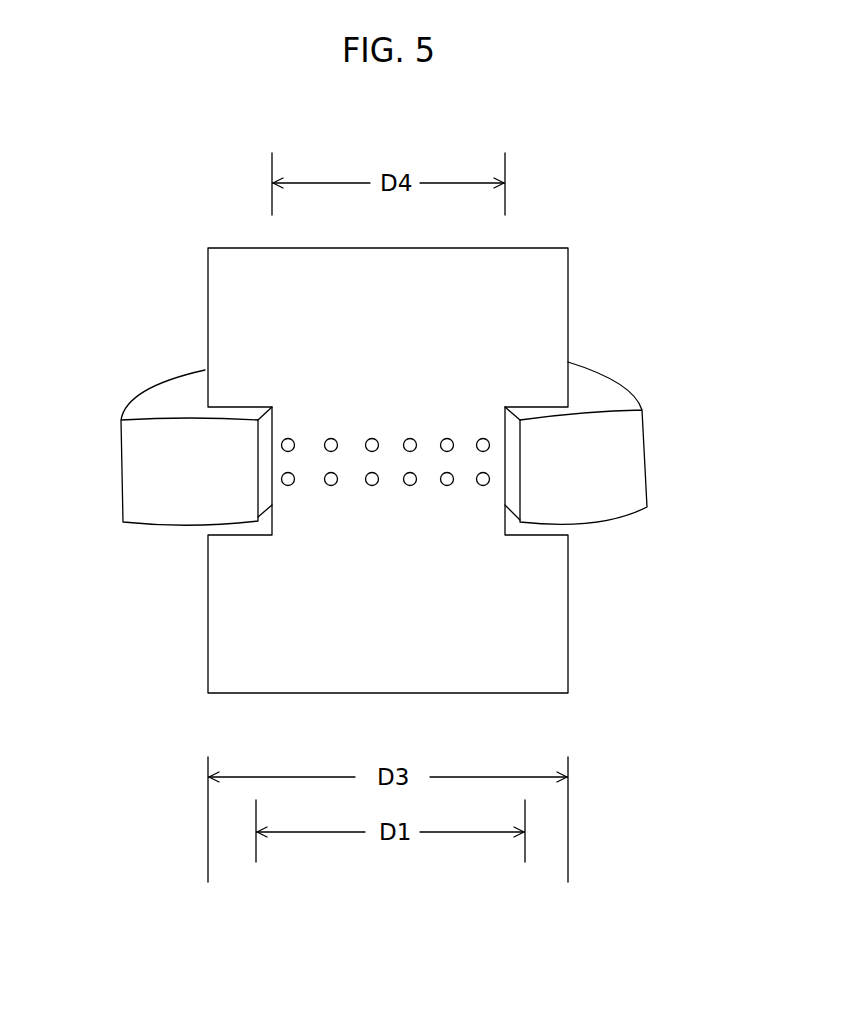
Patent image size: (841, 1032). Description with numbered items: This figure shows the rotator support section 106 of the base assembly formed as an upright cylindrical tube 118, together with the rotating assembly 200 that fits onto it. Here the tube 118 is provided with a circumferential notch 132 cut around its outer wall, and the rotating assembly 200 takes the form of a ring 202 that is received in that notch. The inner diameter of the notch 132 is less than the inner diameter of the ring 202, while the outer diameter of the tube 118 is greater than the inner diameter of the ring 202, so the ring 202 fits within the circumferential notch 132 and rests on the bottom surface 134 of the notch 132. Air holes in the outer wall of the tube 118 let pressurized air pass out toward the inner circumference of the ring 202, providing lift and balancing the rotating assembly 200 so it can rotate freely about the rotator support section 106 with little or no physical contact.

The rotator support section 106 is at (112, 272).
The tube 118 is at (570, 280).
The circumferential notch 132 is at (265, 443).
The bottom surface 134 is at (218, 543).
The rotating assembly 200 is at (623, 362).
The ring 202 is at (647, 458).